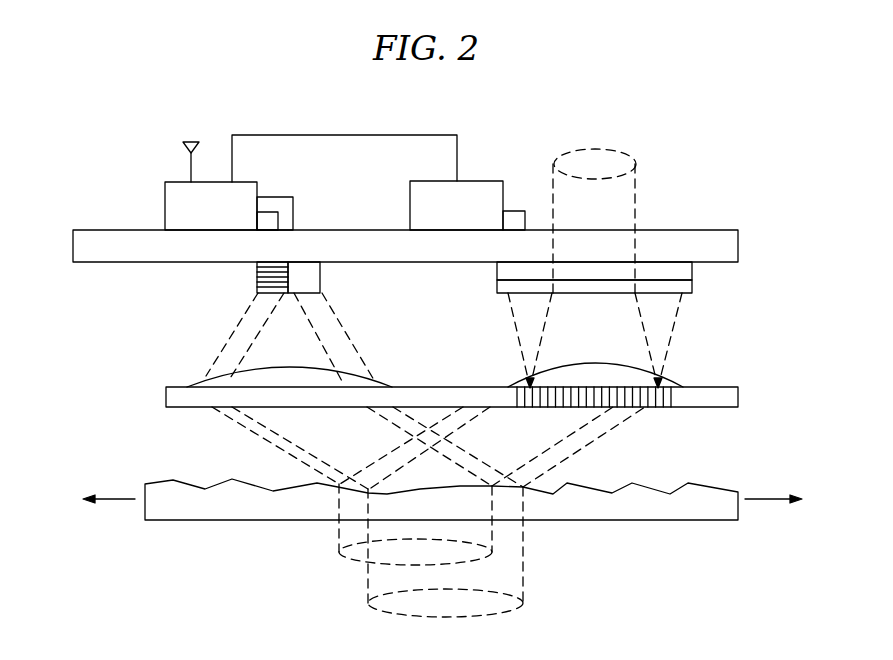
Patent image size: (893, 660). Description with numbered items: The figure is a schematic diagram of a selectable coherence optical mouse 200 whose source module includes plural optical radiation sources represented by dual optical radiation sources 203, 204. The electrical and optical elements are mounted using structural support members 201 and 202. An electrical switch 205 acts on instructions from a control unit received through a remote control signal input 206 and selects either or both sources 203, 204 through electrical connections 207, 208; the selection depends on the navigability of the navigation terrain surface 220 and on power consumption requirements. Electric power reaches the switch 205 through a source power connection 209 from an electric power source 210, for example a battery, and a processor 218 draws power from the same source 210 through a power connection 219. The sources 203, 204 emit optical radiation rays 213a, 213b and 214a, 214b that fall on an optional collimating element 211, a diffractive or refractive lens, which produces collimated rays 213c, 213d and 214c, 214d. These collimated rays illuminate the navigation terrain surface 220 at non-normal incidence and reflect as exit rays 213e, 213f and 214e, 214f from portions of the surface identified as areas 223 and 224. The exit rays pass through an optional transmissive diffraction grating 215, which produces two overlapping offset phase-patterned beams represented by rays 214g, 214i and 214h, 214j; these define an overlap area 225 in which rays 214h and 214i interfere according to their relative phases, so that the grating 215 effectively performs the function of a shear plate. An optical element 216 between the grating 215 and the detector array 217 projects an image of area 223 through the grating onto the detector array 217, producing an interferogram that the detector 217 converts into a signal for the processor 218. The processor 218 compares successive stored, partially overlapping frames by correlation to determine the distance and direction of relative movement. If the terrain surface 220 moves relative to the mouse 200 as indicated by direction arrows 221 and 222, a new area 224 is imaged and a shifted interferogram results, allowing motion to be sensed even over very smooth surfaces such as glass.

The selectable coherence optical mouse 200 is at (550, 103).
The structural support member 201 is at (73, 244).
The structural support member 202 is at (166, 397).
The optical radiation source 203 is at (257, 277).
The optical radiation source 204 is at (320, 279).
The electrical switch 205 is at (165, 212).
The remote control signal input 206 is at (191, 142).
The electrical connection 207 is at (279, 219).
The electrical connection 208 is at (276, 197).
The source power connection 209 is at (334, 135).
The electric power source 210 is at (478, 181).
The collimating element 211 is at (187, 387).
The optical radiation ray 213a is at (234, 330).
The optical radiation ray 213b is at (334, 366).
The collimated ray 213c is at (250, 430).
The collimated ray 213d is at (446, 437).
The exit ray 213e is at (375, 462).
The exit ray 213f is at (574, 434).
The optical radiation ray 214a is at (240, 361).
The optical radiation ray 214b is at (343, 331).
The collimated ray 214c is at (270, 448).
The collimated ray 214d is at (410, 415).
The exit ray 214e is at (483, 415).
The exit ray 214f is at (626, 420).
The processed ray 214g is at (512, 311).
The processed ray 214h is at (549, 307).
The processed ray 214i is at (644, 330).
The processed ray 214j is at (678, 309).
The transmissive diffraction grating 215 is at (676, 407).
The optical element 216 is at (670, 380).
The detector array 217 is at (497, 288).
The processor 218 is at (692, 280).
The power connection 219 is at (512, 211).
The navigation terrain surface 220 is at (745, 476).
The direction arrow 221 is at (112, 503).
The direction arrow 222 is at (772, 503).
The area 223 is at (356, 561).
The area 224 is at (523, 605).
The overlap area 225 is at (606, 150).